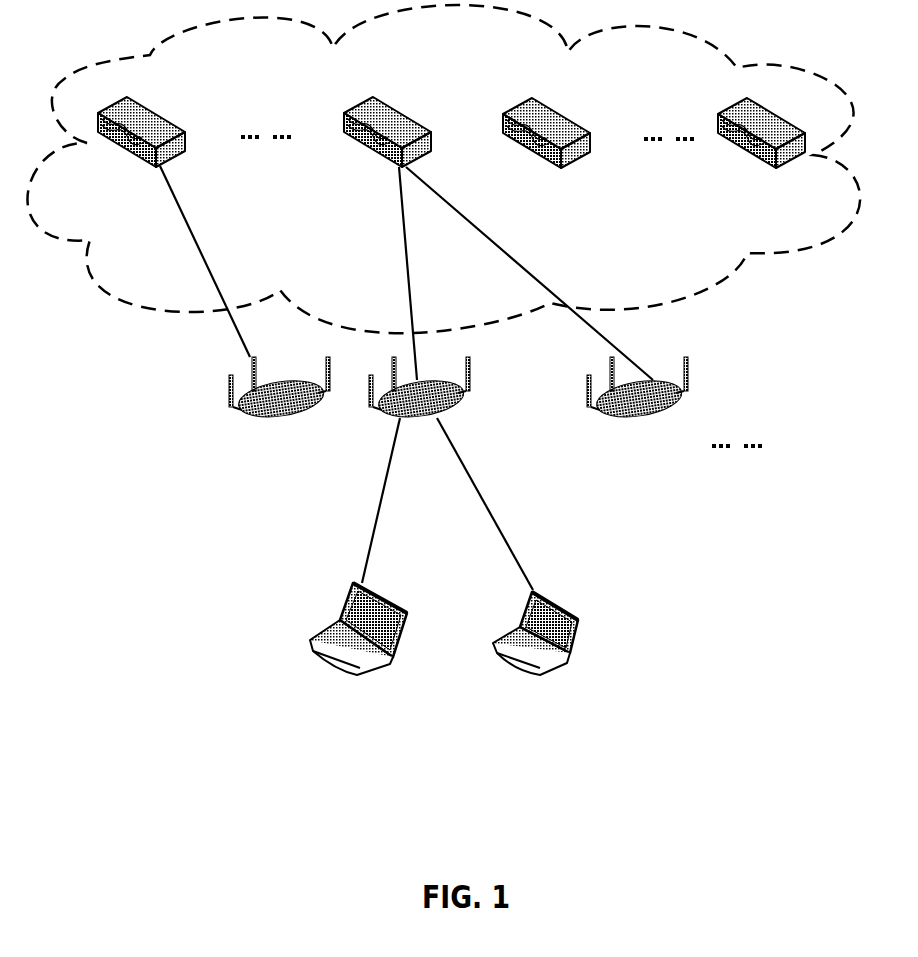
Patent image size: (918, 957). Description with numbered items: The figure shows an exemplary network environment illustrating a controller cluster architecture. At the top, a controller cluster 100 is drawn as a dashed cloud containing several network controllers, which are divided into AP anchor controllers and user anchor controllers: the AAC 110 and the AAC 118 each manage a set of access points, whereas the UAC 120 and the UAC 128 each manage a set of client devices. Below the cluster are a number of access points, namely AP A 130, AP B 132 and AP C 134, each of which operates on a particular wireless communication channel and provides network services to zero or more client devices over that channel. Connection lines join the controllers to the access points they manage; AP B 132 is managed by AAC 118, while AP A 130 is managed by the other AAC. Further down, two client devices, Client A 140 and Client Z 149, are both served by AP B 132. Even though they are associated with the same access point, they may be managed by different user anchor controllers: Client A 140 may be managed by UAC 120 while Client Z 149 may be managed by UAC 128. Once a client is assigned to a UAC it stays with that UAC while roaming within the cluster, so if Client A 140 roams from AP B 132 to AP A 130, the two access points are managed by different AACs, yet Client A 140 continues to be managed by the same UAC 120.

The controller cluster 100 is at (233, 99).
The AP anchor controller (AAC) 110 is at (103, 226).
The AP anchor controller (AAC) 118 is at (346, 221).
The user anchor controller (UAC) 120 is at (536, 226).
The user anchor controller (UAC) 128 is at (726, 221).
The AP A 130 is at (254, 473).
The AP B 132 is at (404, 473).
The AP C 134 is at (620, 473).
The Client A 140 is at (314, 730).
The Client Z 149 is at (520, 730).